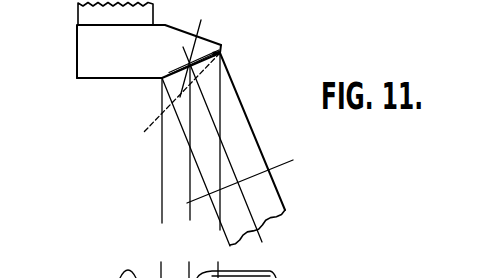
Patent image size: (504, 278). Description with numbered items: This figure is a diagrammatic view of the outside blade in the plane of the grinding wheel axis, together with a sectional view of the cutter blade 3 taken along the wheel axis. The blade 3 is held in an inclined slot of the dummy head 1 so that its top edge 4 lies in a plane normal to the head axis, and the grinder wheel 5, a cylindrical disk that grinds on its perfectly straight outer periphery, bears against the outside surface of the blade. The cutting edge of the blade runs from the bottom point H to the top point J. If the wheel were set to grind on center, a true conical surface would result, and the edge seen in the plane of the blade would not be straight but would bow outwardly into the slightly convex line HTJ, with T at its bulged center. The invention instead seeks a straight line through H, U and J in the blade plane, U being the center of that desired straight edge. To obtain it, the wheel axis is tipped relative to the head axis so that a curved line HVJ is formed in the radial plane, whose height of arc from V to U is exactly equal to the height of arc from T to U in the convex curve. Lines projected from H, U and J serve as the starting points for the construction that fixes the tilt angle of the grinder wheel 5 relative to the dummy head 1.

The dummy head 1 is at (87, 13).
The cutter blade 3 is at (120, 70).
The top edge of the blade 4 is at (222, 44).
The grinder wheel 5 is at (247, 133).
The bottom point of the cutting edge H is at (161, 80).
The center point of the convex curve HTJ T is at (174, 106).
The center point of the straight cutting edge HUJ U is at (190, 62).
The center point of the curve HVJ V is at (194, 50).
The top point of the cutting edge J is at (221, 55).